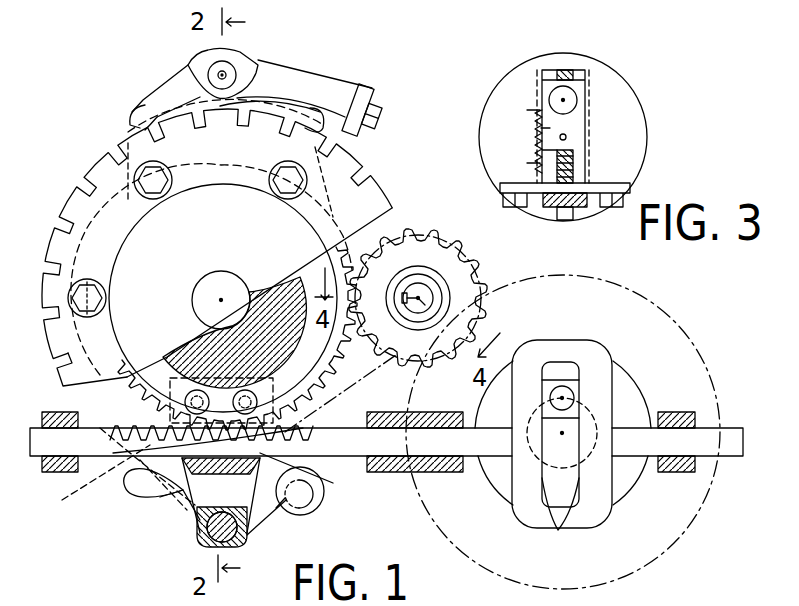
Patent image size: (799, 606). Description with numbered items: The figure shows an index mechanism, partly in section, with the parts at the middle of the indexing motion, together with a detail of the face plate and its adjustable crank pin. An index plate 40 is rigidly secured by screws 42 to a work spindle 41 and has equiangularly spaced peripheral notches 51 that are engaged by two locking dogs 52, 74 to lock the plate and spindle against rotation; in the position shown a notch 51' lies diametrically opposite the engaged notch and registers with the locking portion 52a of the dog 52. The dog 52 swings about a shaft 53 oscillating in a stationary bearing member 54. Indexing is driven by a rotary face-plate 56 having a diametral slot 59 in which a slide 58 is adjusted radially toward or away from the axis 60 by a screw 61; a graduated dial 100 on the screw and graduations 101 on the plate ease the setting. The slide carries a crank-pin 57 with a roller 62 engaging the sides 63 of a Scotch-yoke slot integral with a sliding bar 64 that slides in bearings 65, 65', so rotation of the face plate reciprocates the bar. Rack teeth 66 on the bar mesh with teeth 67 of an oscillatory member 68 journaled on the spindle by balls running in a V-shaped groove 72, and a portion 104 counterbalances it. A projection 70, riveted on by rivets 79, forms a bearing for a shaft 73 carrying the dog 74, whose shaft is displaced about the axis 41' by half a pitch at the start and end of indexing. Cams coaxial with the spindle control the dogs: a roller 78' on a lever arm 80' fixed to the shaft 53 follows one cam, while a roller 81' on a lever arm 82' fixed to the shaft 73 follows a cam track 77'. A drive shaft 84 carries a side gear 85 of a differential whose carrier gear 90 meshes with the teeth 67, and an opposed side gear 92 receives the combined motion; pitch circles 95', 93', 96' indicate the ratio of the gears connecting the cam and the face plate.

In FIG. 1, the index plate 40 is at (108, 162).
In FIG. 1, the work spindle 41 is at (223, 298).
In FIG. 1, the axis of the face plate 41' is at (238, 290).
In FIG. 1, the screws 42 is at (148, 165).
In FIG. 1, the peripheral notches 51 is at (342, 180).
In FIG. 1, the notch 51' is at (226, 171).
In FIG. 1, the locking dog 52 is at (330, 88).
In FIG. 1, the locking portion 52a is at (352, 122).
In FIG. 1, the shaft 53 is at (230, 66).
In FIG. 1, the stationary bearing member 54 is at (190, 63).
In FIG. 1, the rotary face-plate 56 is at (618, 383).
In FIG. 3, the rotary face-plate 56 is at (627, 100).
In FIG. 1, the crank-pin 57 is at (568, 392).
In FIG. 3, the crank-pin 57 is at (573, 100).
In FIG. 3, the slide 58 is at (573, 118).
In FIG. 3, the diametral slot 59 is at (575, 157).
In FIG. 3, the axis of the face plate 60 is at (566, 137).
In FIG. 3, the screw 61 is at (573, 173).
In FIG. 1, the sliding block or roller 62 is at (574, 409).
In FIG. 1, the sides of the slot 63 is at (559, 522).
In FIG. 1, the sliding bar 64 is at (305, 440).
In FIG. 1, the bearing 65 is at (415, 460).
In FIG. 1, the bearing 65' is at (62, 458).
In FIG. 1, the rack teeth 66 is at (307, 460).
In FIG. 1, the teeth 67 is at (280, 400).
In FIG. 1, the oscillatory member 68 is at (143, 373).
In FIG. 1, the projection 70 is at (210, 350).
In FIG. 1, the V-shaped groove 72 is at (200, 533).
In FIG. 1, the shaft 73 is at (210, 545).
In FIG. 1, the locking dog 74 is at (112, 500).
In FIG. 1, the cam track 77' is at (73, 371).
In FIG. 1, the roller 78' is at (348, 139).
In FIG. 1, the rivets 79 is at (217, 390).
In FIG. 1, the lever arm 80' is at (237, 88).
In FIG. 1, the roller 81' is at (326, 498).
In FIG. 1, the lever arm 82' is at (301, 521).
In FIG. 1, the drive shaft 84 is at (428, 268).
In FIG. 1, the side gear 85 is at (447, 315).
In FIG. 1, the gear 90 is at (405, 250).
In FIG. 1, the side gear 92 is at (427, 248).
In FIG. 1, the pitch circle 93' is at (418, 218).
In FIG. 1, the pitch circle 95' is at (418, 315).
In FIG. 1, the pitch circle 96' is at (563, 432).
In FIG. 3, the graduated dial 100 is at (557, 203).
In FIG. 3, the graduations 101 is at (533, 137).
In FIG. 1, the counter-balance portion 104 is at (158, 100).